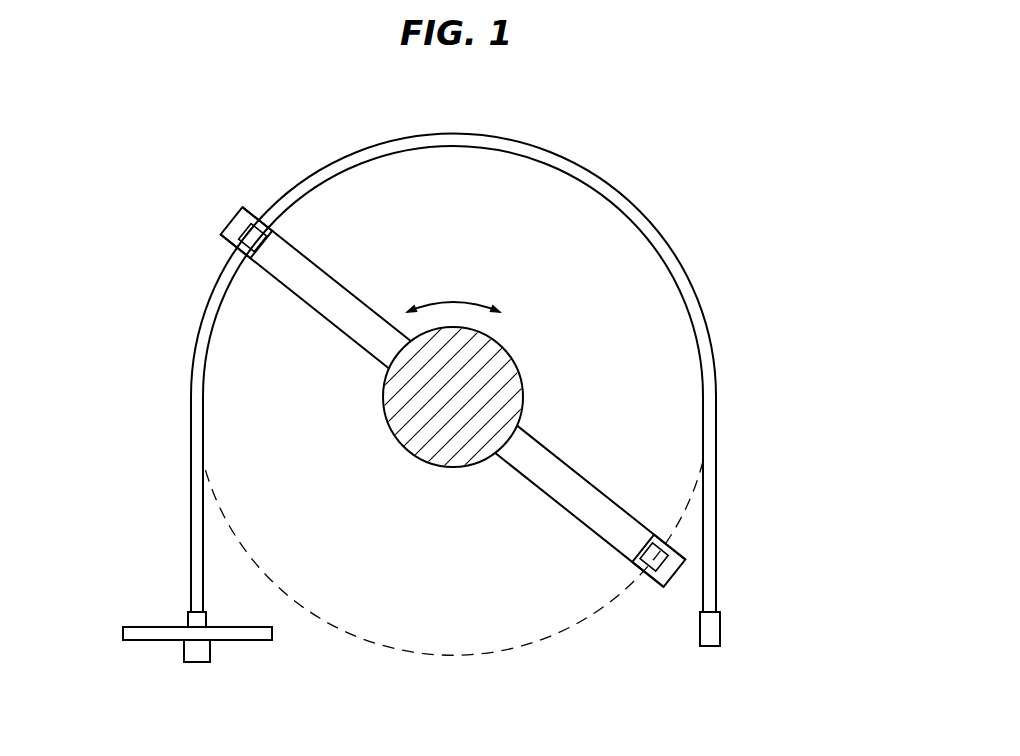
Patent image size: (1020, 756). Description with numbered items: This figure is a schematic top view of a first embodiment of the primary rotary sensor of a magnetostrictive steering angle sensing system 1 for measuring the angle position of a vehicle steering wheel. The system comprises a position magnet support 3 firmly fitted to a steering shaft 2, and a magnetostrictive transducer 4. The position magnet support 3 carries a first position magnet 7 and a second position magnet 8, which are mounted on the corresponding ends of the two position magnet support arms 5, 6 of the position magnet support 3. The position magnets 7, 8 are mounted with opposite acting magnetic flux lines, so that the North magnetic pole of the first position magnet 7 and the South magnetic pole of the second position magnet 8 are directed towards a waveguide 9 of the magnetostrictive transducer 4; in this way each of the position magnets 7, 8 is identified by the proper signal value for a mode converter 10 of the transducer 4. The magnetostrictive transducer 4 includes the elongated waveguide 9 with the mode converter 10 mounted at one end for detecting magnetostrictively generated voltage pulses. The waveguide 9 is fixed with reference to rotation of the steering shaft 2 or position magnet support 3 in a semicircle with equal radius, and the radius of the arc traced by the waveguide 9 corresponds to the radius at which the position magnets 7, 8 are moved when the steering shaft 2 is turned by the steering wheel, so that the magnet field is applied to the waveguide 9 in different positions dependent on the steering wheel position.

The steering angle sensing system 1 is at (737, 148).
The steering shaft 2 is at (396, 440).
The position magnet support 3 is at (345, 352).
The magnetostrictive transducer 4 is at (176, 331).
The position magnet support arm 5 is at (330, 293).
The position magnet support arm 6 is at (588, 500).
The first position magnet 7 is at (252, 237).
The second position magnet 8 is at (652, 562).
The waveguide 9 is at (637, 210).
The mode converter 10 is at (169, 656).